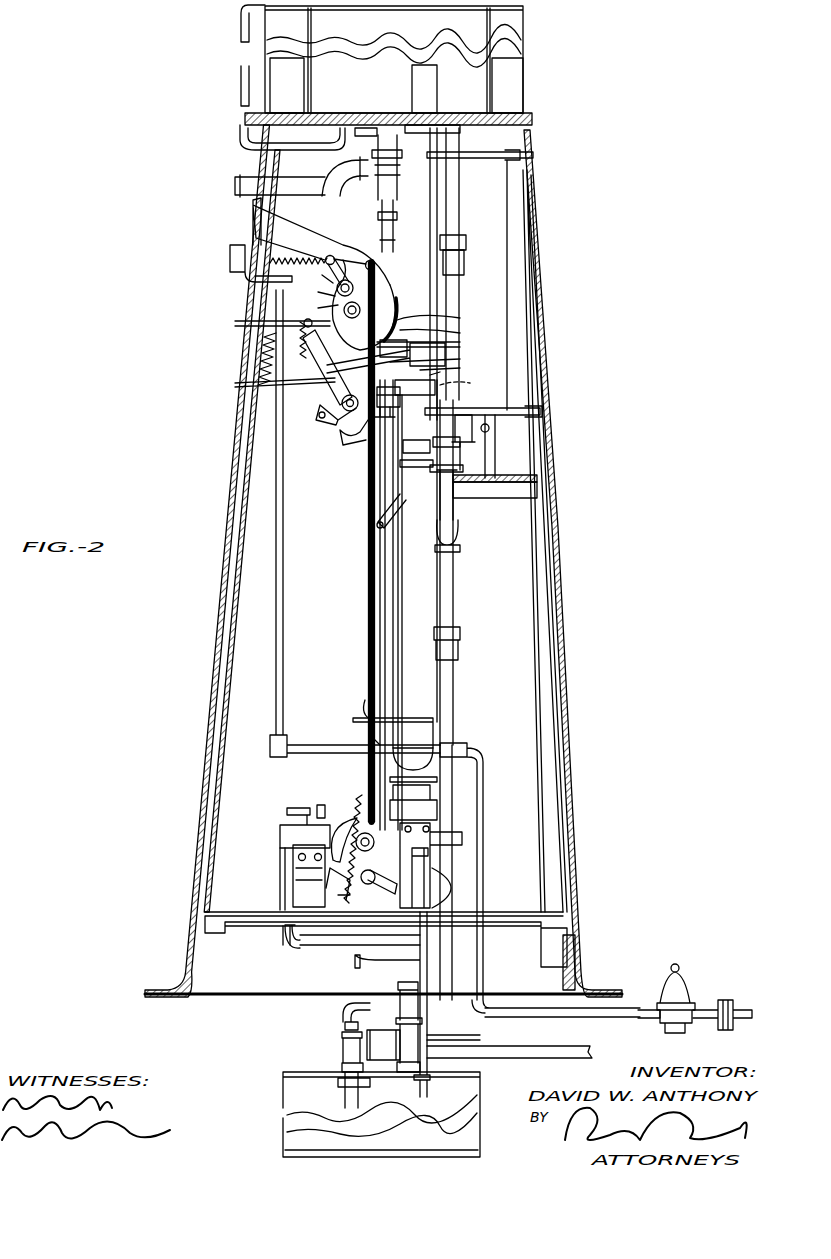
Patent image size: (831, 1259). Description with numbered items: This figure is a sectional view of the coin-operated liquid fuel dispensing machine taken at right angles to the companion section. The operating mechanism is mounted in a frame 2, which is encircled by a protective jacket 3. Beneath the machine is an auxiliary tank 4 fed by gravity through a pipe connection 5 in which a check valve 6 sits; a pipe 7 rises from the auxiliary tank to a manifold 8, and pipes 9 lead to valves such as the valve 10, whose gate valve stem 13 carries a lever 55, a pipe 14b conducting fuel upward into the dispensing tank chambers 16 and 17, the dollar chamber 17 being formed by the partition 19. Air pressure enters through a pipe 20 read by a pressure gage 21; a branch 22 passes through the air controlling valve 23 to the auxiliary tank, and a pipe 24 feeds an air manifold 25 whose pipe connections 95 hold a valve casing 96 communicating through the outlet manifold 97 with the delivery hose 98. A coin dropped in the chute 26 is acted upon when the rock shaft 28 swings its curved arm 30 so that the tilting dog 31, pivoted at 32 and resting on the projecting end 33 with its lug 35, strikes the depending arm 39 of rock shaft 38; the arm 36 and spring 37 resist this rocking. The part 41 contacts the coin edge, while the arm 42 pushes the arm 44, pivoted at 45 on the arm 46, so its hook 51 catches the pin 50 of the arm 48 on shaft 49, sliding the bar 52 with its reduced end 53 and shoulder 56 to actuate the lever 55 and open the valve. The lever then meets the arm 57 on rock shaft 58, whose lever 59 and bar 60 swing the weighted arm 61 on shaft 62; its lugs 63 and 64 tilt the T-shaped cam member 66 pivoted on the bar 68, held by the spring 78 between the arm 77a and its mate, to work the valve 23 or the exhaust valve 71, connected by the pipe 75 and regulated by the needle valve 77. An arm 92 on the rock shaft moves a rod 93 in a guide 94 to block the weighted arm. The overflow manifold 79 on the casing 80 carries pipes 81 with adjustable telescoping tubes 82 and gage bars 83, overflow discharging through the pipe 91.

The frame 2 is at (243, 463).
The jacket 3 is at (230, 486).
The auxiliary tank 4 is at (381, 1114).
The pipe connection 5 is at (540, 1058).
The check valve 6 is at (383, 1045).
The pipe 7 is at (453, 580).
The manifold 8 is at (460, 537).
The pipes 9 is at (457, 506).
The valve 10 is at (472, 440).
The stem 13 is at (478, 412).
The pipe 14b is at (455, 293).
The chamber 16 is at (382, 59).
The dollar chamber 17 is at (396, 60).
The partition 19 is at (305, 81).
The pipe 20 is at (483, 866).
The pressure gage 21 is at (228, 268).
The branch 22 is at (452, 790).
The air controlling valve 23 is at (462, 838).
The pipe 24 is at (364, 760).
The air manifold 25 is at (394, 245).
The chute 26 is at (335, 236).
The rock shaft 28 is at (330, 297).
The arm 30 is at (330, 310).
The tilting dog 31 is at (431, 347).
The pivot 32 is at (442, 333).
The projecting end 33 is at (437, 358).
The lug 35 is at (395, 356).
The arm 36 is at (322, 281).
The spring 37 is at (335, 276).
The rock shaft 38 is at (363, 305).
The depending arm 39 is at (386, 319).
The part 41 is at (441, 318).
The arm 42 is at (366, 438).
The arm 44 is at (271, 386).
The pivot 45 is at (282, 353).
The arm 46 is at (271, 322).
The arm 48 is at (318, 412).
The shaft 49 is at (370, 416).
The pin 50 is at (320, 437).
The hook 51 is at (318, 385).
The bar 52 is at (388, 396).
The reduced end 53 is at (452, 370).
The lever 55 is at (470, 384).
The shoulder 56 is at (410, 395).
The arm 57 is at (470, 400).
The rock shaft 58 is at (494, 431).
The lever 59 is at (392, 505).
The bar 60 is at (390, 560).
The weighted arm 61 is at (445, 888).
The shaft 62 is at (380, 882).
The lug 63 is at (298, 882).
The lug 64 is at (345, 940).
The T-shaped cam member 66 is at (373, 848).
The bar 68 is at (300, 865).
The valve 71 is at (283, 836).
The pipe 75 is at (280, 885).
The needle valve 77 is at (338, 884).
The arm 77a is at (362, 786).
The spring 78 is at (350, 815).
The manifold 79 is at (378, 730).
The casing 80 is at (437, 813).
The pipes 81 is at (415, 551).
The tubes 82 is at (437, 87).
The gage bar 83 is at (437, 201).
The pipe 91 is at (404, 975).
The arm 92 is at (363, 258).
The rod 93 is at (365, 683).
The guide 94 is at (366, 718).
The pipe connections 95 is at (355, 133).
The valve casing 96 is at (387, 167).
The outlet manifold 97 is at (335, 165).
The delivery hose 98 is at (244, 178).